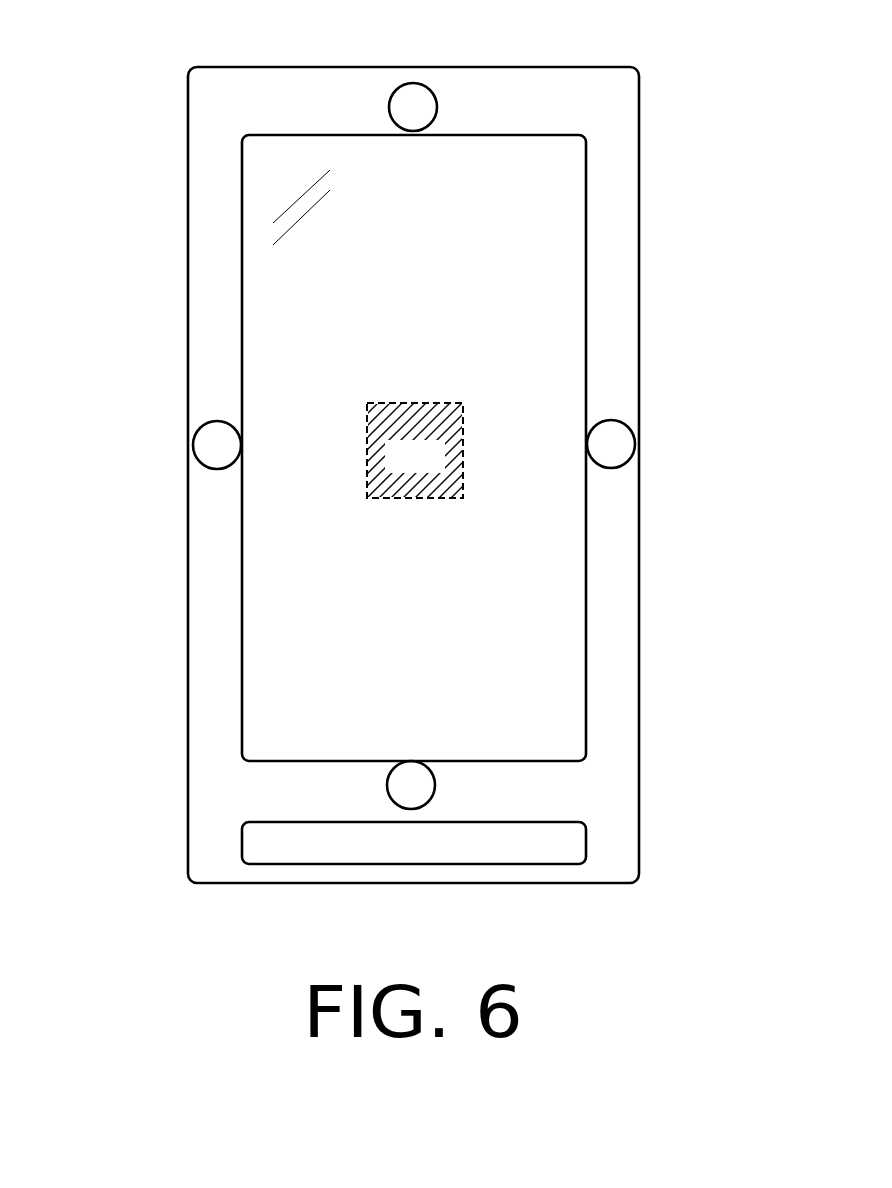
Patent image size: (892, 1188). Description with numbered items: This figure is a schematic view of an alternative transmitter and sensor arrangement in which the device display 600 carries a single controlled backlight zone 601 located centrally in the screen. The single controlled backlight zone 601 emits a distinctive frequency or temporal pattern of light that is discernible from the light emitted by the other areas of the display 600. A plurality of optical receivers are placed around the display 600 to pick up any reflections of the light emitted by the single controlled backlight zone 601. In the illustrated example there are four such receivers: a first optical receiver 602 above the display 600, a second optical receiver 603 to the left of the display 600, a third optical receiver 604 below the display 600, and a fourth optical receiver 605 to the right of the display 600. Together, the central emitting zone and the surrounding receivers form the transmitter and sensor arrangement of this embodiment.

The device display 600 is at (528, 280).
The single controlled backlight zone 601 is at (440, 468).
The first optical receiver 602 is at (413, 107).
The second optical receiver 603 is at (217, 445).
The third optical receiver 604 is at (411, 785).
The fourth optical receiver 605 is at (611, 444).